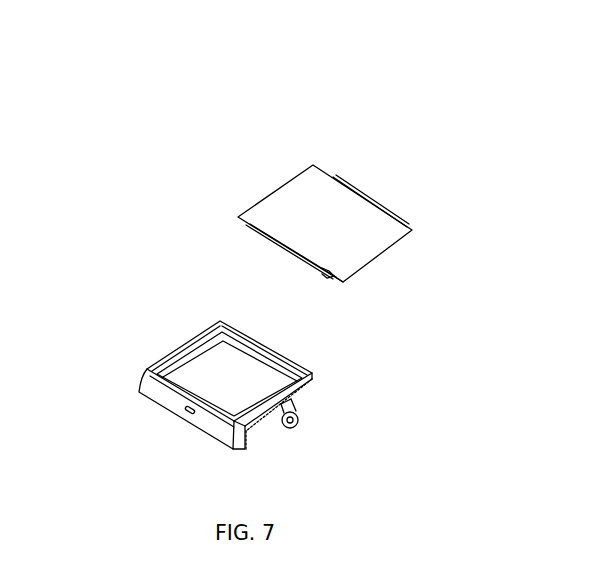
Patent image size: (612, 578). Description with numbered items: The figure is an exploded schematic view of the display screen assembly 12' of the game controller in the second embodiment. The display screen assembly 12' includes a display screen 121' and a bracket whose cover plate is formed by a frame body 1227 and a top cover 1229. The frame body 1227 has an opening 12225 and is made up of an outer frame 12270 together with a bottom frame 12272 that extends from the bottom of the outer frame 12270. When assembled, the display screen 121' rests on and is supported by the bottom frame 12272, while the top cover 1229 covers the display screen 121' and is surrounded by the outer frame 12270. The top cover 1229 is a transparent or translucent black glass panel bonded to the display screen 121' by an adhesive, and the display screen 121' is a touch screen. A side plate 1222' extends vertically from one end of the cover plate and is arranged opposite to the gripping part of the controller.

The display screen assembly 12' is at (247, 248).
The top cover 1229 is at (282, 213).
The display screen 121' is at (347, 304).
The frame body 1227 is at (180, 352).
The opening 12225 is at (223, 343).
The outer frame 12270 is at (270, 350).
The bottom frame 12272 is at (165, 363).
The side plate 1222' is at (167, 417).